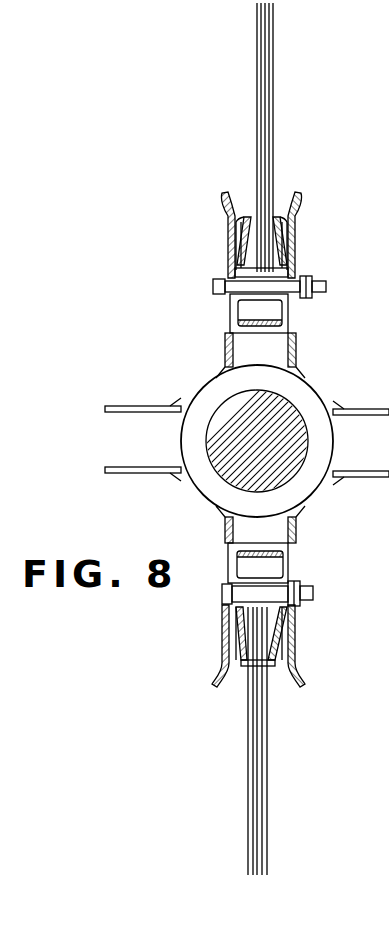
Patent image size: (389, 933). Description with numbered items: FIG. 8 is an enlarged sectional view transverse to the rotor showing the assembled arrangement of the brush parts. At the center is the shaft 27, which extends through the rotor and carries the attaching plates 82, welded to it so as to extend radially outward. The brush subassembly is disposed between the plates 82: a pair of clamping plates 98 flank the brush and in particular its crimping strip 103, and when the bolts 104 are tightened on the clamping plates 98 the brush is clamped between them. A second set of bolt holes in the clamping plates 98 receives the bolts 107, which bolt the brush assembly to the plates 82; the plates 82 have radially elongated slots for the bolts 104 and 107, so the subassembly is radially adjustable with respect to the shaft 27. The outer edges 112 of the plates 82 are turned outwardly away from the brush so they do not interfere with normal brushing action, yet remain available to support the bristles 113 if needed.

The bristles 113 is at (256, 156).
The outer edges 112 is at (221, 197).
The clamping plates 98 is at (295, 230).
The brush crimping strip 103 is at (275, 215).
The plates 82 is at (297, 346).
The bolts 107 is at (327, 288).
The shaft 27 is at (220, 445).
The bolts 104 is at (313, 592).